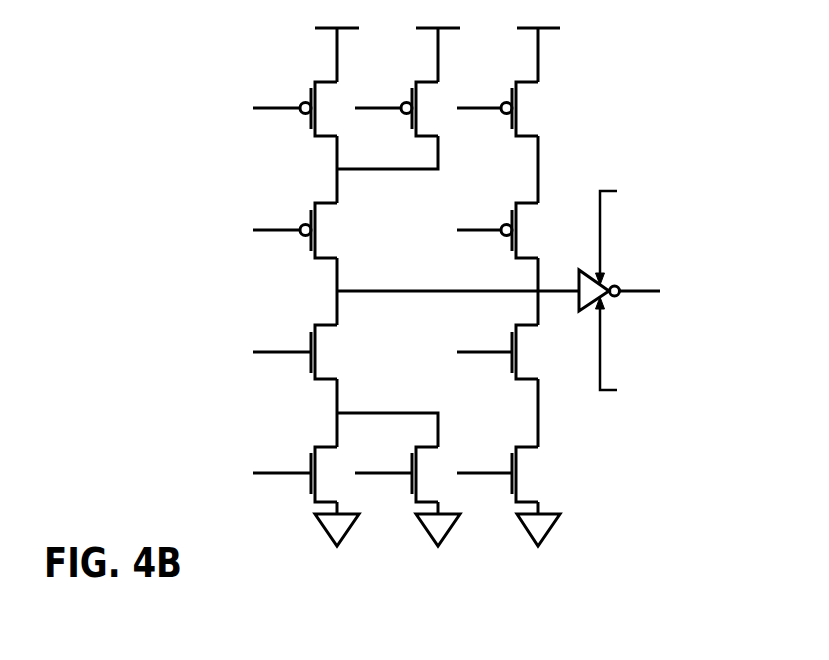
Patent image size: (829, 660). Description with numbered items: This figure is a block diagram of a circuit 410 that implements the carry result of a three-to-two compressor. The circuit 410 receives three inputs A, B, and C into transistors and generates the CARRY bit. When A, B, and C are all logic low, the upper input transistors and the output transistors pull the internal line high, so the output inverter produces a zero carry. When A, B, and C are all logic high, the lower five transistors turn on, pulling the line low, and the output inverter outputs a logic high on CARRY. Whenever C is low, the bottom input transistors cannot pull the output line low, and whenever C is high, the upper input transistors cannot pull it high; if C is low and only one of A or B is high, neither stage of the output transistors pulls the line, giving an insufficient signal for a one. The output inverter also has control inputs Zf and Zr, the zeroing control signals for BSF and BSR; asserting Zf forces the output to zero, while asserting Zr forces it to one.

The circuit 410 is at (173, 38).
The input A is at (395, 290).
The input B is at (446, 290).
The input C is at (295, 289).
The zeroing control signal for BSF Zf is at (626, 230).
The zeroing control signal for BSR Zr is at (627, 350).
The CARRY bit CARRY is at (659, 274).